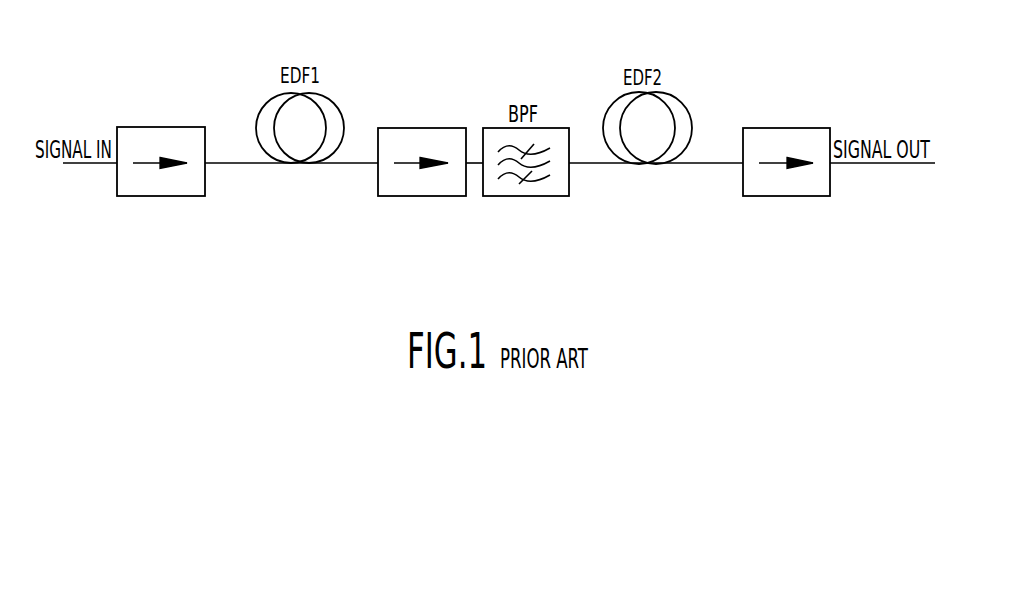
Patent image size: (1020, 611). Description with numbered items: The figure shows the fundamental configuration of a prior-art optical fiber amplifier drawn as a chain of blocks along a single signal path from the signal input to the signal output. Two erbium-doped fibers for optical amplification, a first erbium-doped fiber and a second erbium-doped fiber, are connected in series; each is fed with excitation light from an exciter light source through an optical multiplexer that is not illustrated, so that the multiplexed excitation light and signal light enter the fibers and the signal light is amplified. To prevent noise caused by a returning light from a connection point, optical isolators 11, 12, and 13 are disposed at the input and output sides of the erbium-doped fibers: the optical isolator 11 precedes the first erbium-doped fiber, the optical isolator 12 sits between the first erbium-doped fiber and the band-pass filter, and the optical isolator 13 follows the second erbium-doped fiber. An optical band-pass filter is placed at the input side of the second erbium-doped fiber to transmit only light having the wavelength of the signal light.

The optical isolator 11 is at (154, 127).
The optical isolator 12 is at (413, 128).
The optical isolator 13 is at (780, 128).